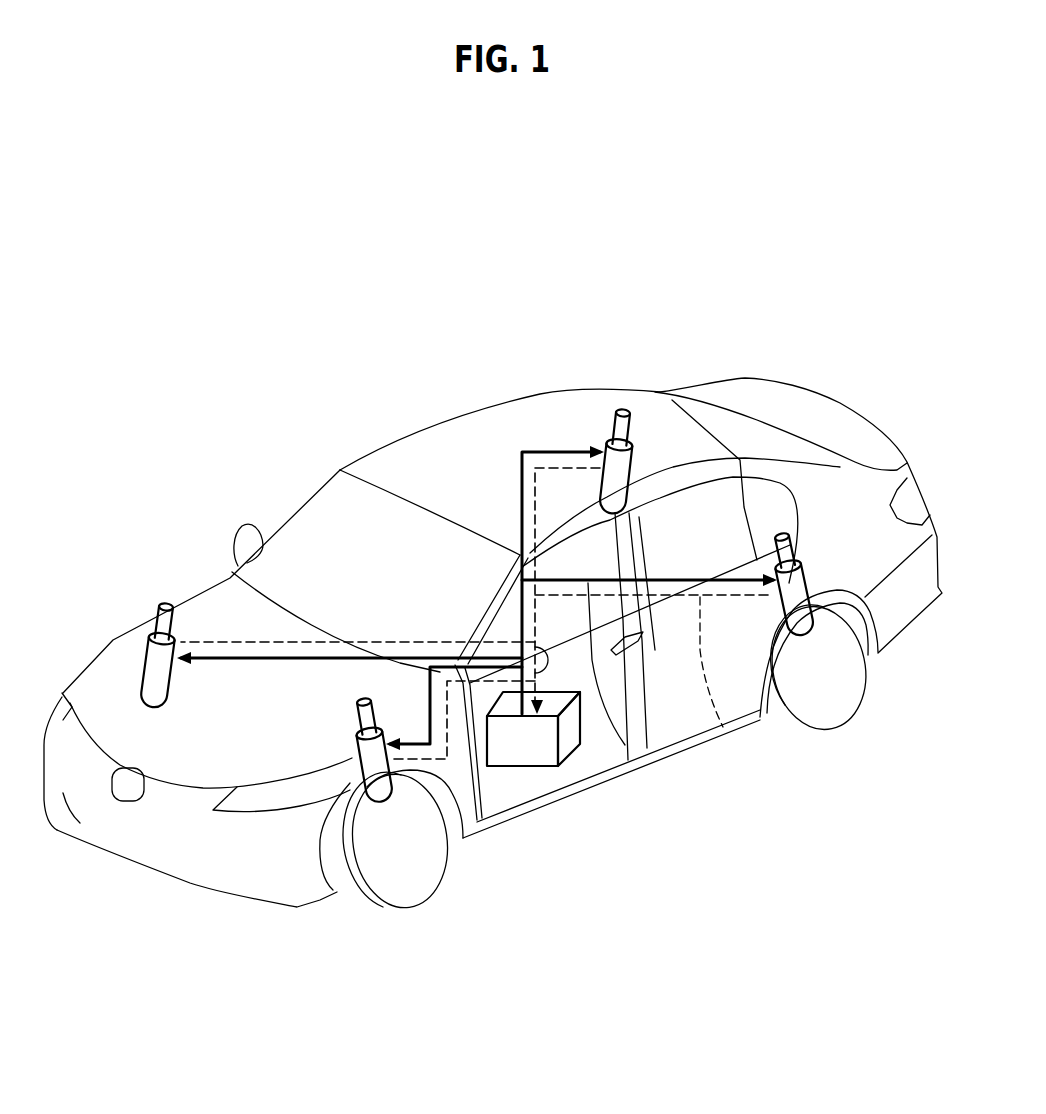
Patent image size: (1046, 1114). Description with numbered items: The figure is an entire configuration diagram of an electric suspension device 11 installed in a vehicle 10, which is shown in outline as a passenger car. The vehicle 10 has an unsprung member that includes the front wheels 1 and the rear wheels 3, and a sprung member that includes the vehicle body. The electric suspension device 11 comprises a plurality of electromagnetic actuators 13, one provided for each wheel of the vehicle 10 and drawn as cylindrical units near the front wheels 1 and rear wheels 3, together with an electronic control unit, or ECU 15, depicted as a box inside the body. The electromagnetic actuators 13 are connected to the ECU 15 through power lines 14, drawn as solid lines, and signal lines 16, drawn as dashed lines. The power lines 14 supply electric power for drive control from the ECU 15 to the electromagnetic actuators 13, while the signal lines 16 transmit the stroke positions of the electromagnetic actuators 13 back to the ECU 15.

The front wheels 1 is at (853, 675).
The rear wheels 3 is at (517, 400).
The vehicle 10 is at (460, 417).
The electric suspension device 11 is at (445, 599).
The electromagnetic actuator 13 is at (658, 453).
The power lines 14 is at (630, 770).
The electronic control unit (ECU) 15 is at (520, 767).
The signal lines 16 is at (723, 727).